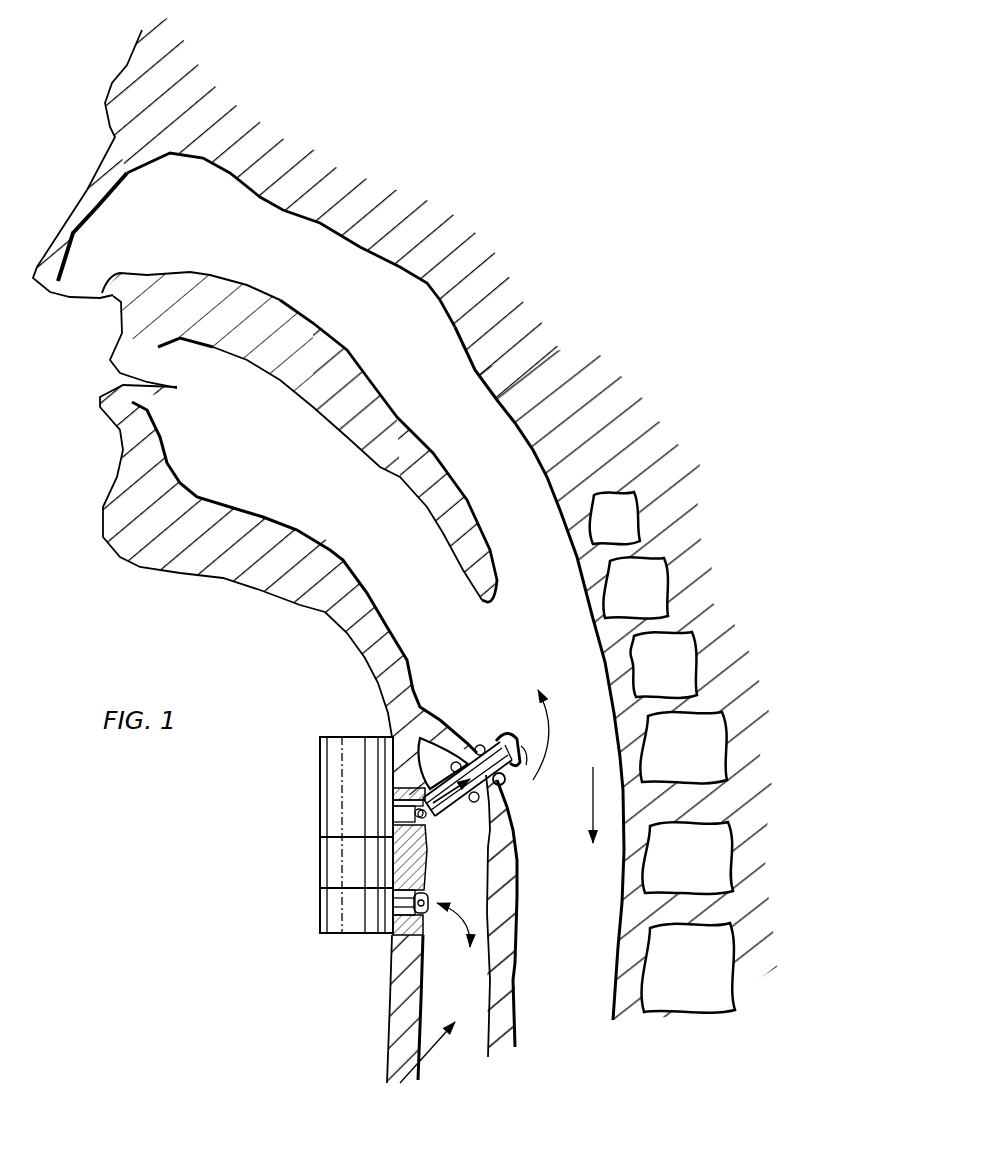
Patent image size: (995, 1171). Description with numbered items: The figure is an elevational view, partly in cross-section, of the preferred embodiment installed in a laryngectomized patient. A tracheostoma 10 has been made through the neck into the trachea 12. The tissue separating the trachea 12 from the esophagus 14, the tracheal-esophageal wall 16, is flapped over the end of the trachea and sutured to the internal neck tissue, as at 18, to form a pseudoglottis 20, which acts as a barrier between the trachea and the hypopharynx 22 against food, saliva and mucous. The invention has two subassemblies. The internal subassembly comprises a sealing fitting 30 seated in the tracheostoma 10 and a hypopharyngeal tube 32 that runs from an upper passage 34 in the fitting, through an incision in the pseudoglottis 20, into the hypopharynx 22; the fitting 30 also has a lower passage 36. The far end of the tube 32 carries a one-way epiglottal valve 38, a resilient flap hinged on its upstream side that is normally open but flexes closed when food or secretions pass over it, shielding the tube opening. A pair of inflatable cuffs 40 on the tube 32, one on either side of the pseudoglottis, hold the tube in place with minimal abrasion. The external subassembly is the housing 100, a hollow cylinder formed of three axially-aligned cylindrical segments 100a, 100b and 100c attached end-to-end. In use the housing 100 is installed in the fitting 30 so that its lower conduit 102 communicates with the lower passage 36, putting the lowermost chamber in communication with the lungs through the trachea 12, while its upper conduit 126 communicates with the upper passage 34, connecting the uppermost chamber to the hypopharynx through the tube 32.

The tracheostoma 10 is at (393, 948).
The trachea 12 is at (417, 1052).
The esophagus 14 is at (580, 913).
The tracheal-esophageal wall 16 is at (505, 957).
The suture location 18 is at (413, 700).
The pseudoglottis 20 is at (443, 733).
The hypopharynx 22 is at (541, 652).
The sealing fitting 30 is at (426, 857).
The hypopharyngeal tube 32 is at (505, 812).
The upper passage 34 is at (424, 817).
The lower passage 36 is at (424, 912).
The one-way epiglottal valve 38 is at (524, 757).
The inflatable cuffs 40 is at (505, 783).
The housing 100 is at (312, 820).
The cylindrical segment 100a is at (320, 927).
The cylindrical segment 100b is at (321, 855).
The cylindrical segment 100c is at (321, 805).
The lower conduit 102 is at (418, 893).
The upper conduit 126 is at (390, 777).